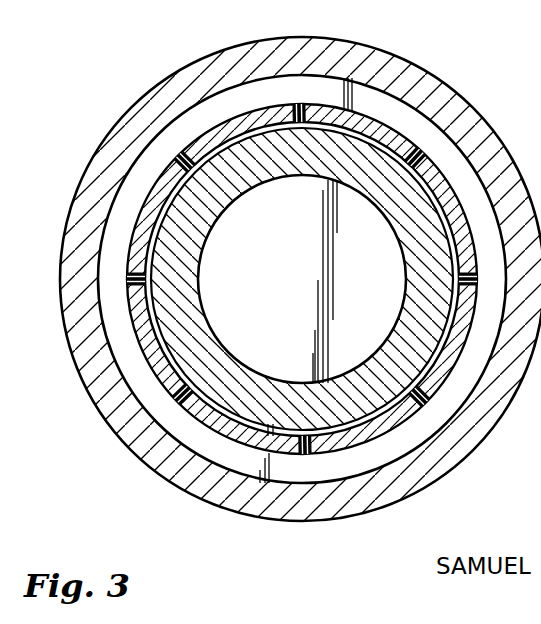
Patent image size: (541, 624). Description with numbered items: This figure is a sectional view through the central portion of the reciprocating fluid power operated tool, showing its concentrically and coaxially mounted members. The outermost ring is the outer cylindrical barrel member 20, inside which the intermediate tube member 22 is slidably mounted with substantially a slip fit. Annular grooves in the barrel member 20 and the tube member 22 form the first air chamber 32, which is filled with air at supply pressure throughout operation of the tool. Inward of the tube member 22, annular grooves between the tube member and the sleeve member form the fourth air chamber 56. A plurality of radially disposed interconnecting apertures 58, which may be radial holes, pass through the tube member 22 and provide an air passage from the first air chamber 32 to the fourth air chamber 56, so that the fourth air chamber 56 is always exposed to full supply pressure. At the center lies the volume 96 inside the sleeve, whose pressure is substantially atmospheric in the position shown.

The outer cylindrical barrel member 20 is at (430, 73).
The intermediate tube member 22 is at (457, 200).
The first air chamber 32 is at (251, 105).
The fourth air chamber 56 is at (265, 128).
The radially disposed interconnecting apertures 58 is at (303, 106).
The volume 96 is at (317, 267).